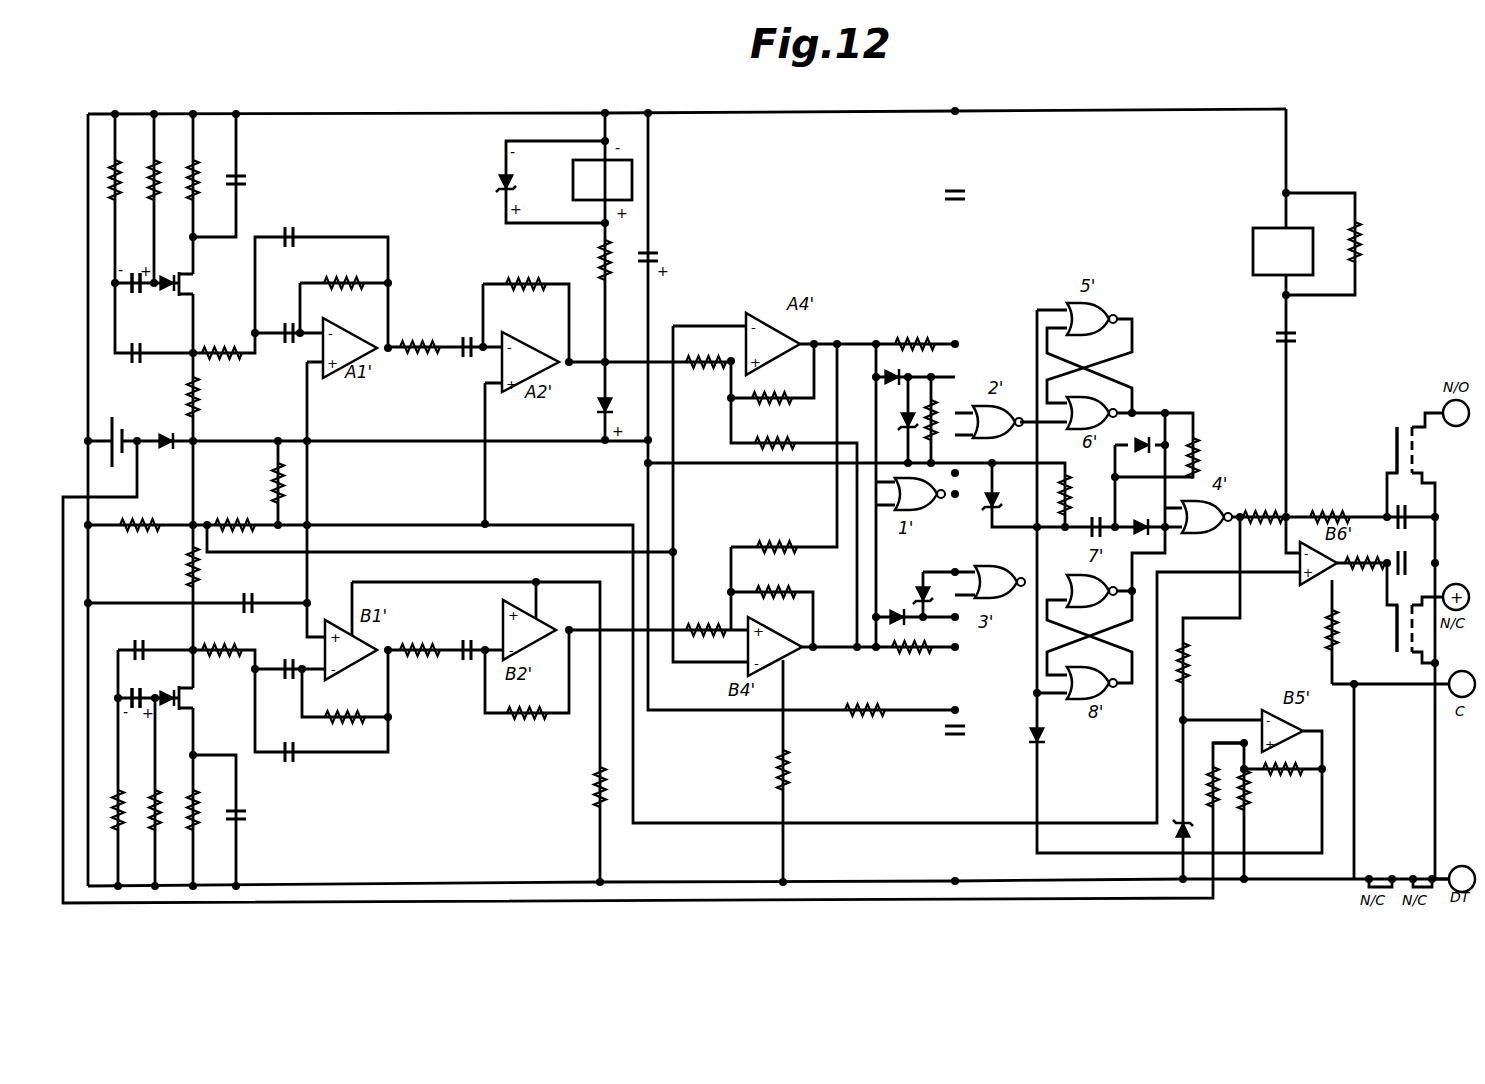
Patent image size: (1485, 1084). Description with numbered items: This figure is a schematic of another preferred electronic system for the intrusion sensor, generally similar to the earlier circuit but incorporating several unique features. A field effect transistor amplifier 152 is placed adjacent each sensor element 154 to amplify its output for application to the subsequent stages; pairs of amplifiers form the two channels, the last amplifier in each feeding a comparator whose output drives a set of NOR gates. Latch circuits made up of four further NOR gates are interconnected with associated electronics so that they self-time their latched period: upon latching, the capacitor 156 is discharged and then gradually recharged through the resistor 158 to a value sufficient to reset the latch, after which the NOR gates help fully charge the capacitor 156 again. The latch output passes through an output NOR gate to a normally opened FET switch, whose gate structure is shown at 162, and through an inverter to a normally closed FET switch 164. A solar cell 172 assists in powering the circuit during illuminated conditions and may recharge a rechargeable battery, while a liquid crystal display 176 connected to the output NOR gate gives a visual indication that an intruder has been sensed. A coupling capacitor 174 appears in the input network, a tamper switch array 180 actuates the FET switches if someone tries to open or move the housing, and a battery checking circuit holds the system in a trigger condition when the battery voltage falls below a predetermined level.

The field effect transistor amplifier 152 is at (200, 287).
The sensor element 154 is at (146, 292).
The capacitor 156 is at (1096, 512).
The resistor 158 is at (1065, 520).
The transistor switch 162 is at (1396, 449).
The normally closed FET switch 164 is at (1396, 638).
The solar cell 172 is at (610, 192).
The capacitor 174 is at (136, 402).
The liquid crystal display 176 is at (1291, 264).
The tamper switch array 180 is at (1458, 866).